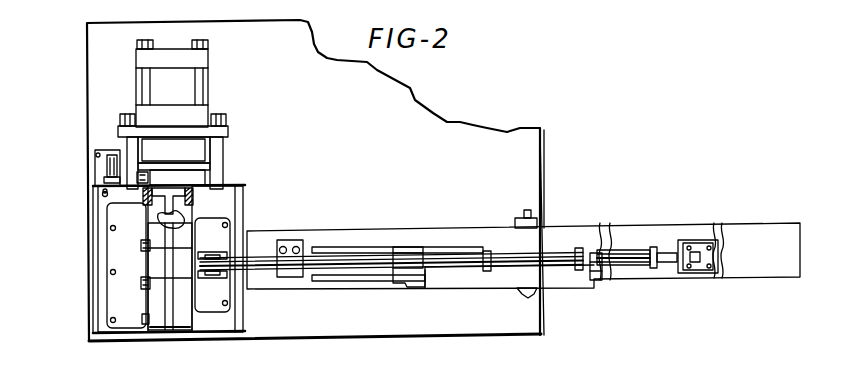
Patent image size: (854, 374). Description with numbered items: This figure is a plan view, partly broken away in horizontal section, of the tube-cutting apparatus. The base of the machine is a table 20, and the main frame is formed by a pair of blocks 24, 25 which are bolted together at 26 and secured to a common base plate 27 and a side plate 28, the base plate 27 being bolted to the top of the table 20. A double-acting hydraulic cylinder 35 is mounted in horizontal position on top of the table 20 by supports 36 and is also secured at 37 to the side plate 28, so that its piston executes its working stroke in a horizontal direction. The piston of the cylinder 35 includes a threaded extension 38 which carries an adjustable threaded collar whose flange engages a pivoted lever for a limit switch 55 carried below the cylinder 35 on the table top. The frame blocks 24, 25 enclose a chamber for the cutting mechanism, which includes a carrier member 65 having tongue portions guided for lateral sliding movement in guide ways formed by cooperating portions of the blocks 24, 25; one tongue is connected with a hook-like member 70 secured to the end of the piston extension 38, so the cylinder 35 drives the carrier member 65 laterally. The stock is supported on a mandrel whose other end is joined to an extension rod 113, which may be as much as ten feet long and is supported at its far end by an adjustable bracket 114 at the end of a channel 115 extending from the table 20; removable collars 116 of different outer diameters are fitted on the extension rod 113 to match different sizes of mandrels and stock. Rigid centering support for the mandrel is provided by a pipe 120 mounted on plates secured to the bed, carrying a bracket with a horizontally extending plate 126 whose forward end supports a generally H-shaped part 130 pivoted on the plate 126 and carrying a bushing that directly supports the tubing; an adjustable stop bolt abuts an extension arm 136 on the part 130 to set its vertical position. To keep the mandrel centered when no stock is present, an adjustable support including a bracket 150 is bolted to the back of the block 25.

The table 20 is at (470, 130).
The block 24 is at (150, 302).
The block 25 is at (192, 318).
The bolts 26 is at (143, 246).
The base plate 27 is at (245, 317).
The side plate 28 is at (228, 190).
The double-acting hydraulic cylinder 35 is at (120, 100).
The supports 36 is at (210, 83).
The securing point 37 is at (130, 141).
The threaded extension 38 is at (185, 160).
The limit switch 55 is at (108, 166).
The carrier member 65 is at (184, 224).
The hook-like member 70 is at (150, 220).
The extension rod 113 is at (620, 248).
The bracket 114 is at (692, 240).
The channel 115 is at (735, 226).
The removable collars 116 is at (485, 251).
The pipe 120 is at (357, 250).
The plate 126 is at (485, 282).
The H-shaped part 130 is at (408, 247).
The extension arm 136 is at (403, 284).
The bracket 150 is at (226, 288).